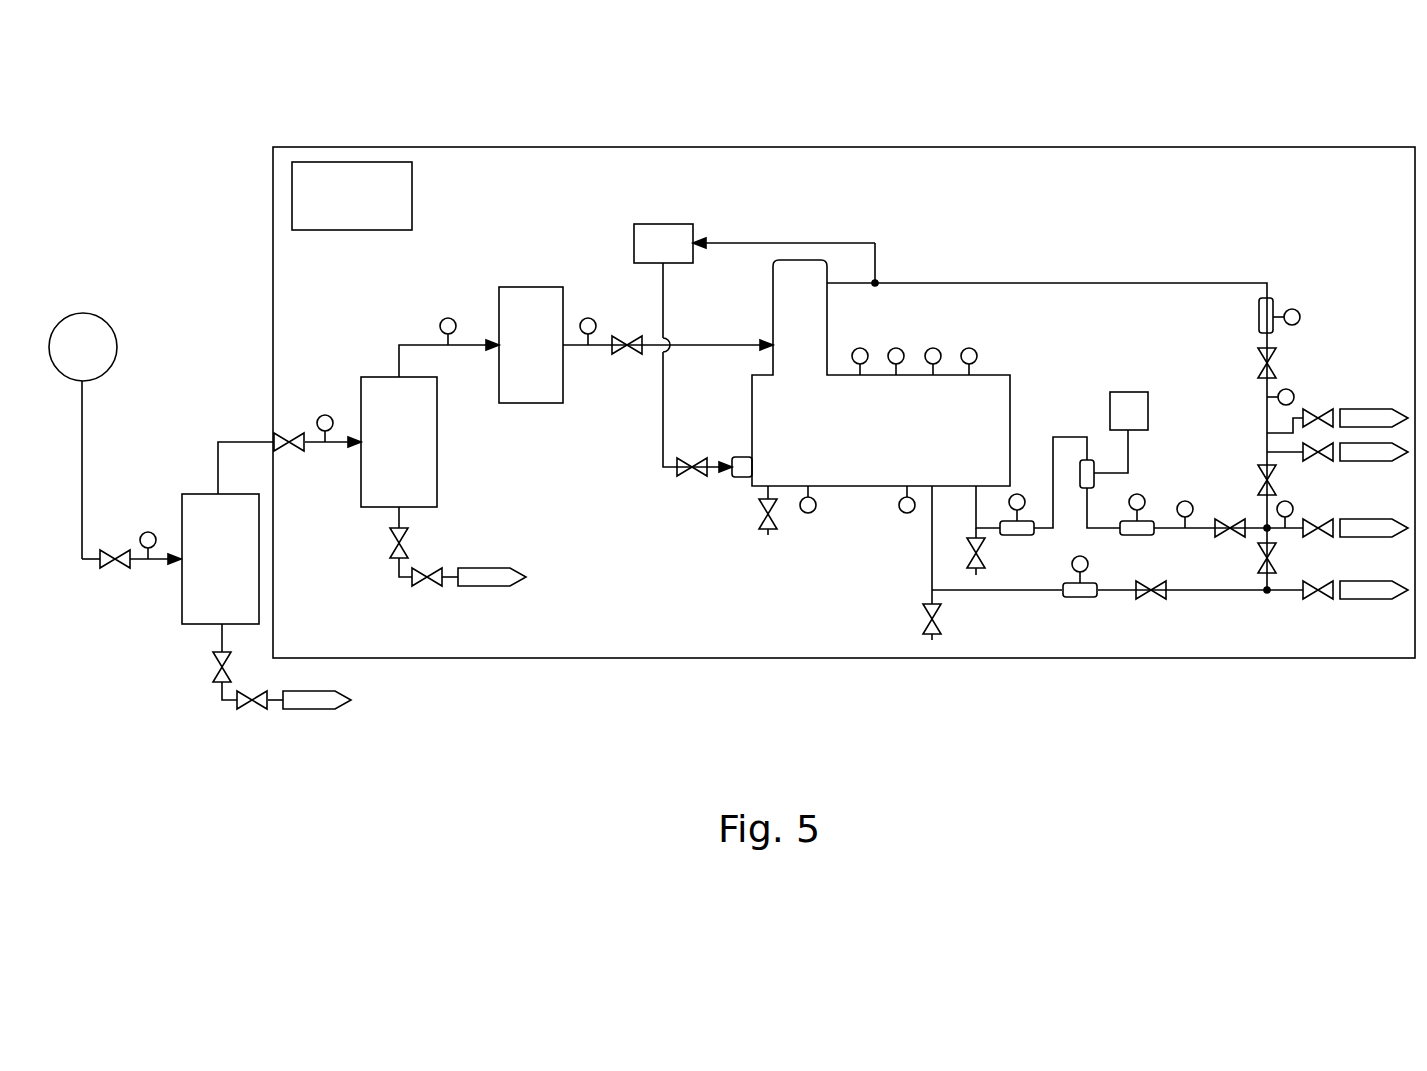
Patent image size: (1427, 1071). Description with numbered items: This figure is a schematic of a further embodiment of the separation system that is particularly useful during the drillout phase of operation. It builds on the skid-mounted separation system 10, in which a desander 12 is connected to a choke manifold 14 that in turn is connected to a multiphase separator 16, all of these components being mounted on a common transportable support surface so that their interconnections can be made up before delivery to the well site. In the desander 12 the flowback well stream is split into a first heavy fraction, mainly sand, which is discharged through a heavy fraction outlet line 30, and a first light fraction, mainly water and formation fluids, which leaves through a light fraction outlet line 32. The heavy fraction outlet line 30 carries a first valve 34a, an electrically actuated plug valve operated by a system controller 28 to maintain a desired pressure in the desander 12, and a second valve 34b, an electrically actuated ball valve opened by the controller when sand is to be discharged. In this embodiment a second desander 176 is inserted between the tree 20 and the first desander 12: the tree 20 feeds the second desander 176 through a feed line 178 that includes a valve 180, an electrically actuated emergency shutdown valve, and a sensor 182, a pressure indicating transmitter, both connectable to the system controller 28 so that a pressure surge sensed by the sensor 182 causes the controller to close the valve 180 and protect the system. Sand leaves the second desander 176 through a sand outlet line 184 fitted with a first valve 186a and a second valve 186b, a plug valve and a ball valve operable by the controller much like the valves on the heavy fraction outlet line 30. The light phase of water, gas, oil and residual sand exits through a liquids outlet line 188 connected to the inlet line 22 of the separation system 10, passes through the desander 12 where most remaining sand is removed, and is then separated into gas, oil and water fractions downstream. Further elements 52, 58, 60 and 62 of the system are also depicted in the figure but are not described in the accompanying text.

The separation system 10 is at (903, 128).
The desander 12 is at (412, 454).
The choke manifold 14 is at (546, 357).
The multiphase separator 16 is at (906, 437).
The tree 20 is at (97, 359).
The inlet line 22 is at (332, 445).
The system controller 28 is at (365, 208).
The heavy fraction outlet line 30 is at (395, 566).
The light fraction outlet line 32 is at (411, 345).
The first valve 34a is at (409, 541).
The second valve 34b is at (428, 582).
The feed line 52 is at (705, 345).
The overhead line 58 is at (980, 283).
The product line 60 is at (1064, 437).
The bottoms line 62 is at (1000, 591).
The second desander 176 is at (241, 575).
The feed line 178 is at (83, 433).
The valve 180 is at (113, 565).
The sensor 182 is at (147, 530).
The sand outlet line 184 is at (219, 640).
The first valve 186a is at (220, 668).
The second valve 186b is at (253, 706).
The liquids outlet line 188 is at (243, 442).